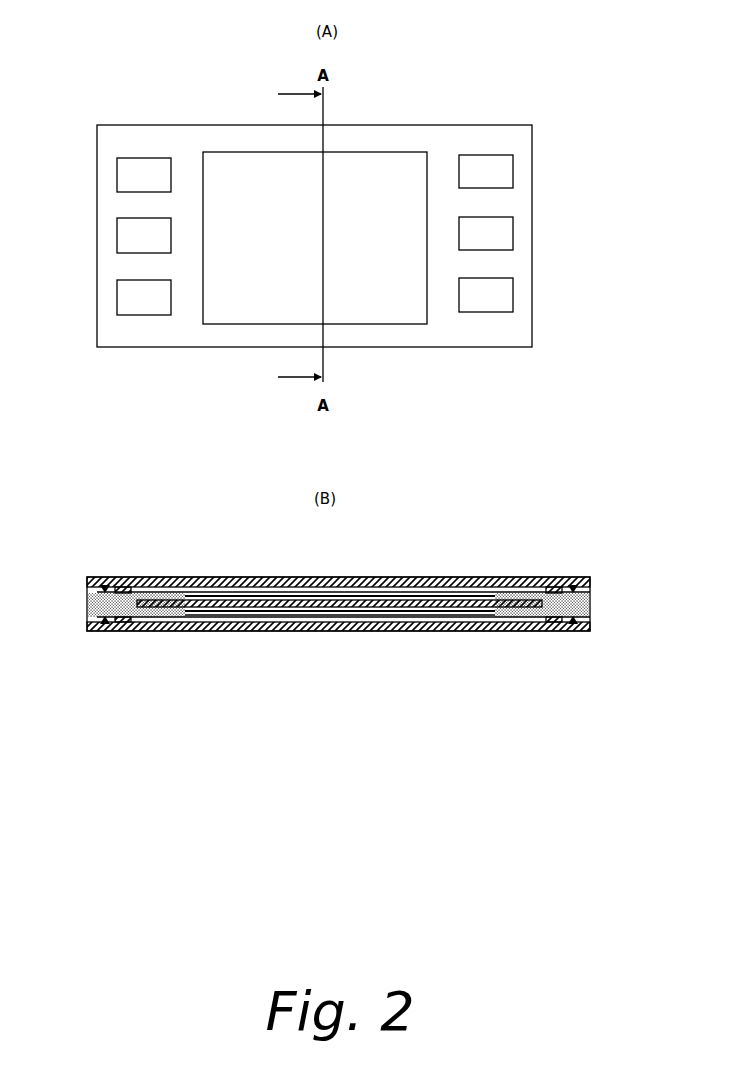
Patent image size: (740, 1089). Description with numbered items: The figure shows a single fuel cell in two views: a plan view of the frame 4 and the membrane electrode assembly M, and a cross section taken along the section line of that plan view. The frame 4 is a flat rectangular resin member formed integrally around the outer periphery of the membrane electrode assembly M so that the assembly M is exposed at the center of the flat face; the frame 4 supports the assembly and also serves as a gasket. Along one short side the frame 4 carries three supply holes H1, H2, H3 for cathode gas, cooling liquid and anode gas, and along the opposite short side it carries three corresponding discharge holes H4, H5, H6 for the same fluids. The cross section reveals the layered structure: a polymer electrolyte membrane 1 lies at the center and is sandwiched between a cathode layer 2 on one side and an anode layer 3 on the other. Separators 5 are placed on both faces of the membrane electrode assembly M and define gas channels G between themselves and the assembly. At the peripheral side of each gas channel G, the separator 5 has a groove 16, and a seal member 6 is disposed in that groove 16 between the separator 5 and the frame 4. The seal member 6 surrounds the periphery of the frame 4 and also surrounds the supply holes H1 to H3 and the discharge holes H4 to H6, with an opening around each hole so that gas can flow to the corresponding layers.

The frame 4 is at (413, 136).
The membrane electrode assembly M is at (370, 298).
The supply hole H1 is at (117, 174).
The supply hole H2 is at (117, 237).
The supply hole H3 is at (117, 301).
The discharge hole H4 is at (513, 165).
The discharge hole H5 is at (513, 229).
The discharge hole H6 is at (513, 296).
The electrolyte membrane 1 is at (584, 604).
The cathode layer 2 is at (318, 596).
The anode layer 3 is at (326, 616).
The separator 5 is at (388, 580).
The seal member 6 is at (123, 590).
The groove 16 is at (103, 588).
The gas channel G is at (218, 589).